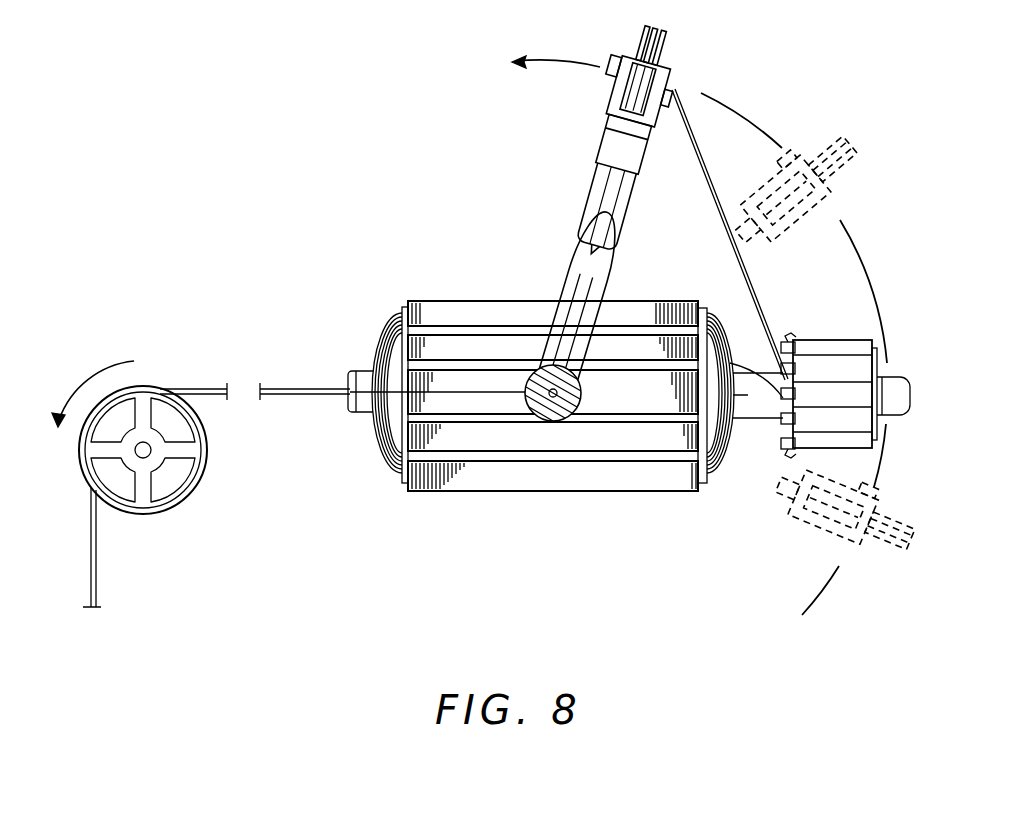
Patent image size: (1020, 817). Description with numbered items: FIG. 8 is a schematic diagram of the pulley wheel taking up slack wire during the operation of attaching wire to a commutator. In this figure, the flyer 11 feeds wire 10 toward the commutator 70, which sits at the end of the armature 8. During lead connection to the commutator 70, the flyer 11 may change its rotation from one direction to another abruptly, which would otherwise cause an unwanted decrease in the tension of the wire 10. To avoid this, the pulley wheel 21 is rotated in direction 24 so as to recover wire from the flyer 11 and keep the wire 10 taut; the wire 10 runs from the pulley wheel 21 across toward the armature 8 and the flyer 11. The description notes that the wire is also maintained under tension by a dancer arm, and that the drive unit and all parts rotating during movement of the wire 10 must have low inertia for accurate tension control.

The armature 8 is at (459, 300).
The wire 10 is at (214, 386).
The flyer 11 is at (586, 204).
The pulley wheel 21 is at (185, 495).
The direction 24 is at (93, 381).
The commutator 70 is at (827, 380).